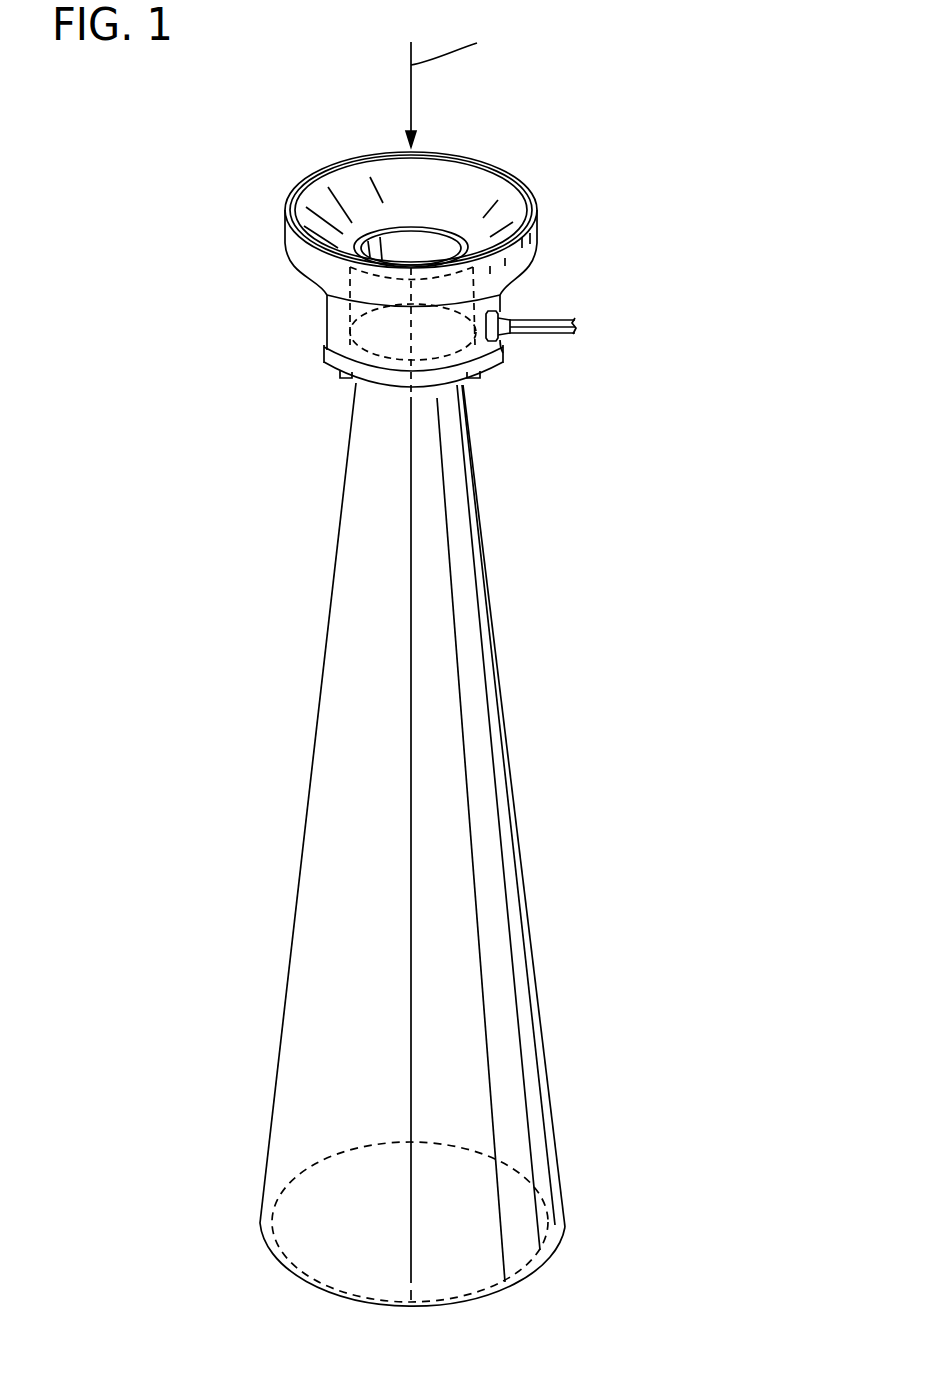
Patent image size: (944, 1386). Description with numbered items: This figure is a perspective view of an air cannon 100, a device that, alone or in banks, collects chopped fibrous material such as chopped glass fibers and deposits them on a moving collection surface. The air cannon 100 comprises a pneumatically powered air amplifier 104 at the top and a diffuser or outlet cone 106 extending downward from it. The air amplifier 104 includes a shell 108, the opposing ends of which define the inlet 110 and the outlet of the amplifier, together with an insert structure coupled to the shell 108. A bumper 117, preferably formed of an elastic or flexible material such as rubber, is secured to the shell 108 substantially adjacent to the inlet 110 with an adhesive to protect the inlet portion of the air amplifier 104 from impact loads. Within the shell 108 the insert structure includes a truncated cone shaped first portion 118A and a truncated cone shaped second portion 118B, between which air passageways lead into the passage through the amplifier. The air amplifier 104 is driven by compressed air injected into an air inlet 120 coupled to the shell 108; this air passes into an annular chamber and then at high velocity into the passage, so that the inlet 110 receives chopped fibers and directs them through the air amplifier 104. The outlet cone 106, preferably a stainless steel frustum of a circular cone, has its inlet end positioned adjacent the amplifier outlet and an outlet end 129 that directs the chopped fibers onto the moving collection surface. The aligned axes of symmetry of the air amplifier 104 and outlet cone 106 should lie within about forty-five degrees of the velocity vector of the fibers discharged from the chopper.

The air cannon 100 is at (530, 688).
The air amplifier 104 is at (277, 250).
The outlet cone 106 is at (393, 844).
The shell 108 is at (292, 240).
The inlet 110 is at (317, 150).
The bumper 117 is at (305, 182).
The first portion 118A is at (460, 184).
The second portion 118B is at (445, 250).
The air inlet 120 is at (507, 314).
The outlet end 129 is at (275, 1262).